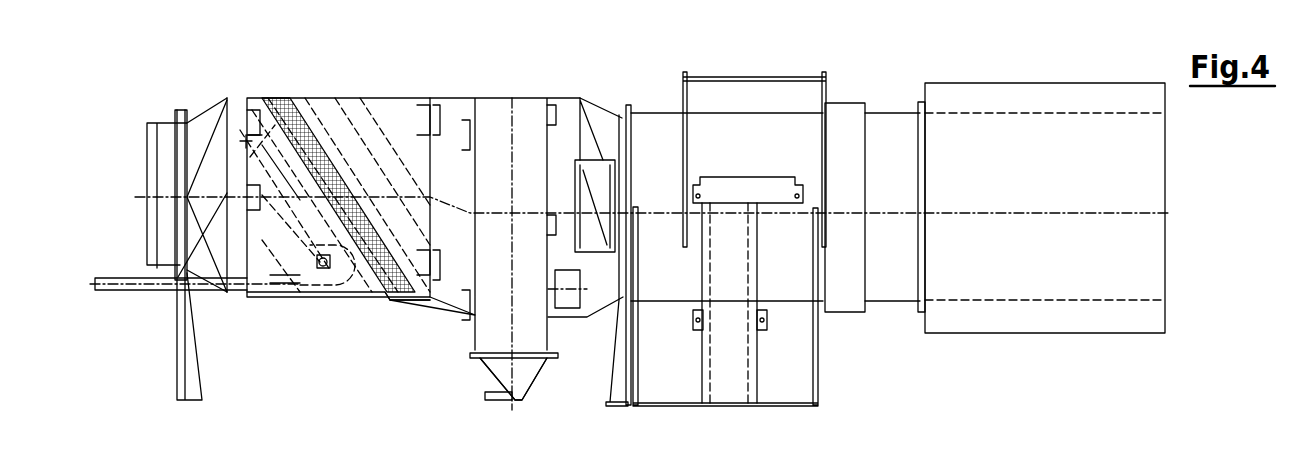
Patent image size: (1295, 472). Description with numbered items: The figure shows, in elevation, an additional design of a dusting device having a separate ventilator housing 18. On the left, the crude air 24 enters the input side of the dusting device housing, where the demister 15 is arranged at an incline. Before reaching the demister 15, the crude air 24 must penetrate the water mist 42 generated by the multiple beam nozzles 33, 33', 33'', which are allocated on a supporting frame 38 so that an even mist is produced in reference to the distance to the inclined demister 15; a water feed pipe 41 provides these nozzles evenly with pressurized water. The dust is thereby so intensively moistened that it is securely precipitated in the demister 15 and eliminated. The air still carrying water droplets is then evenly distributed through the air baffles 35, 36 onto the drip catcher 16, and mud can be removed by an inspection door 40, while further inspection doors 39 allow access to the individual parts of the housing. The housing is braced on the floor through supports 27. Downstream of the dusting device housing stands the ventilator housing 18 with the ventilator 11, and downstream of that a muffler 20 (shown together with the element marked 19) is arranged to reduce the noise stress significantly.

The ventilator 11 is at (732, 390).
The demister 15 is at (288, 100).
The drip catcher 16 is at (522, 127).
The ventilator housing 18 is at (800, 397).
The motor 19 is at (1045, 246).
The muffler 20 is at (1044, 318).
The crude air 24 is at (208, 197).
The supports 27 is at (192, 395).
The multiple beam nozzle 33 is at (322, 301).
The multiple beam nozzle 33' is at (272, 276).
The multiple beam nozzle 33'' is at (248, 114).
The air baffle 35 is at (396, 300).
The air baffle 36 is at (578, 130).
The supporting frame 38 is at (313, 225).
The inspection door 39 is at (531, 330).
The inspection door 40 is at (630, 107).
The water feed pipe 41 is at (130, 284).
The water mist 42 is at (205, 157).